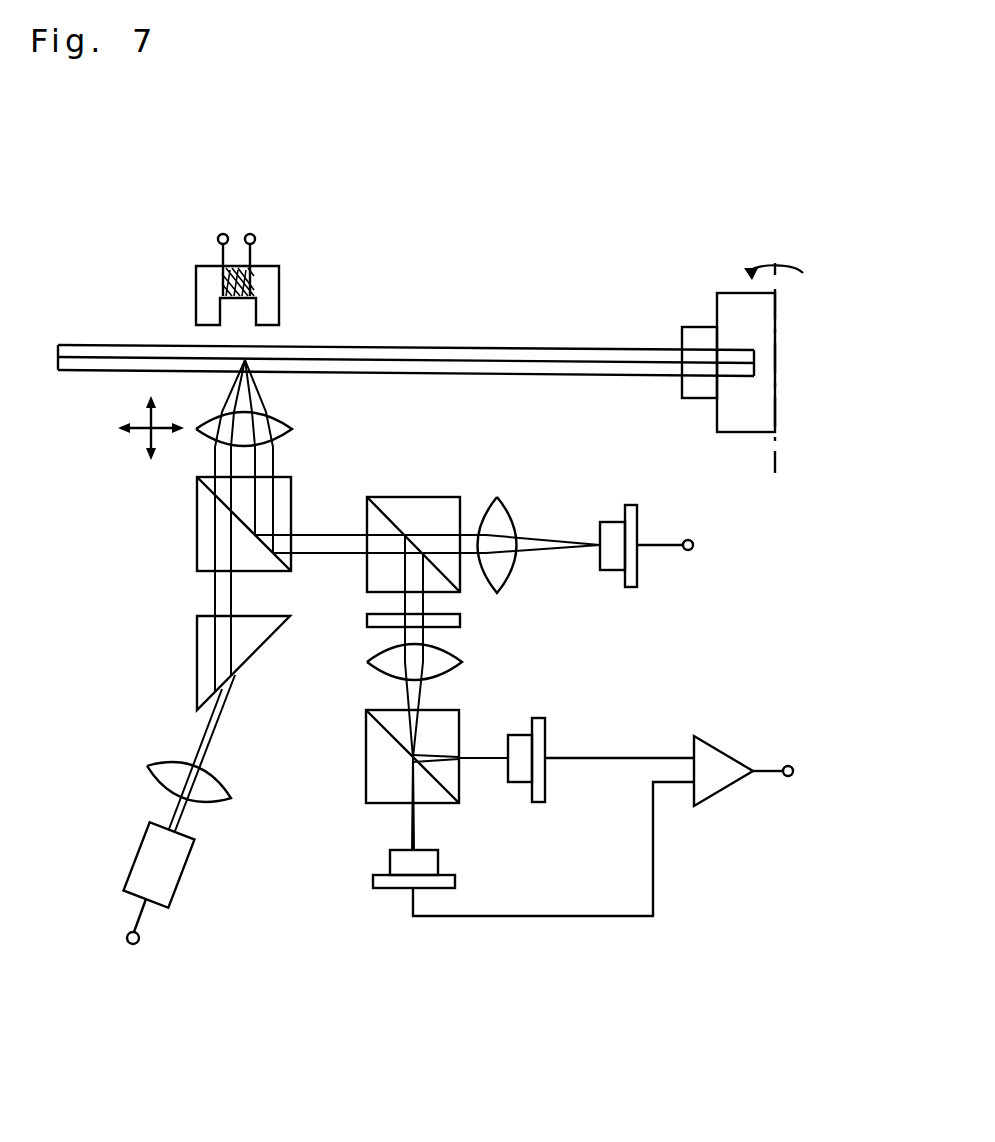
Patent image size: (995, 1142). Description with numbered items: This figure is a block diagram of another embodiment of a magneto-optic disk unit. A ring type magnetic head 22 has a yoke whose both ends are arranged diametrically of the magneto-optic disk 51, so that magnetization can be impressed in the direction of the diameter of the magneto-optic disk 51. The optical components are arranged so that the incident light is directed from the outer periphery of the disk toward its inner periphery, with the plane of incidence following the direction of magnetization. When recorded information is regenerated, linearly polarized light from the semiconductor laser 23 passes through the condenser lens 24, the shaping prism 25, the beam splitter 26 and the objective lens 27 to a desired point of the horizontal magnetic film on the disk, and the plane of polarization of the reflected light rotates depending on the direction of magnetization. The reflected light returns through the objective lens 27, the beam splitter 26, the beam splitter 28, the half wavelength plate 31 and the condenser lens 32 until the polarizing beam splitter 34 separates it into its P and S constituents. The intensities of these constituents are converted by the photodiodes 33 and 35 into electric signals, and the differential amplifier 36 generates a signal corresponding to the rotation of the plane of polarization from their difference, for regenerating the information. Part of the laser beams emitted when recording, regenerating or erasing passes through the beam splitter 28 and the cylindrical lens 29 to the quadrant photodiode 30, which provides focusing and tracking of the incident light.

The magneto-optic disk 51 is at (105, 345).
The ring type magnetic head 22 is at (196, 287).
The semiconductor laser 23 is at (141, 847).
The condenser lens 24 is at (158, 761).
The shaping prism 25 is at (200, 652).
The beam splitter 26 is at (200, 518).
The objective lens 27 is at (292, 425).
The beam splitter 28 is at (407, 497).
The cylindrical lens 29 is at (495, 497).
The quadrant photodiode 30 is at (633, 587).
The ½ wavelength plate 31 is at (460, 620).
The condenser lens 32 is at (462, 663).
The photodiode 33 is at (542, 718).
The polarizing beam splitter 34 is at (366, 770).
The photodiode 35 is at (383, 887).
The differential amplifier 36 is at (735, 787).